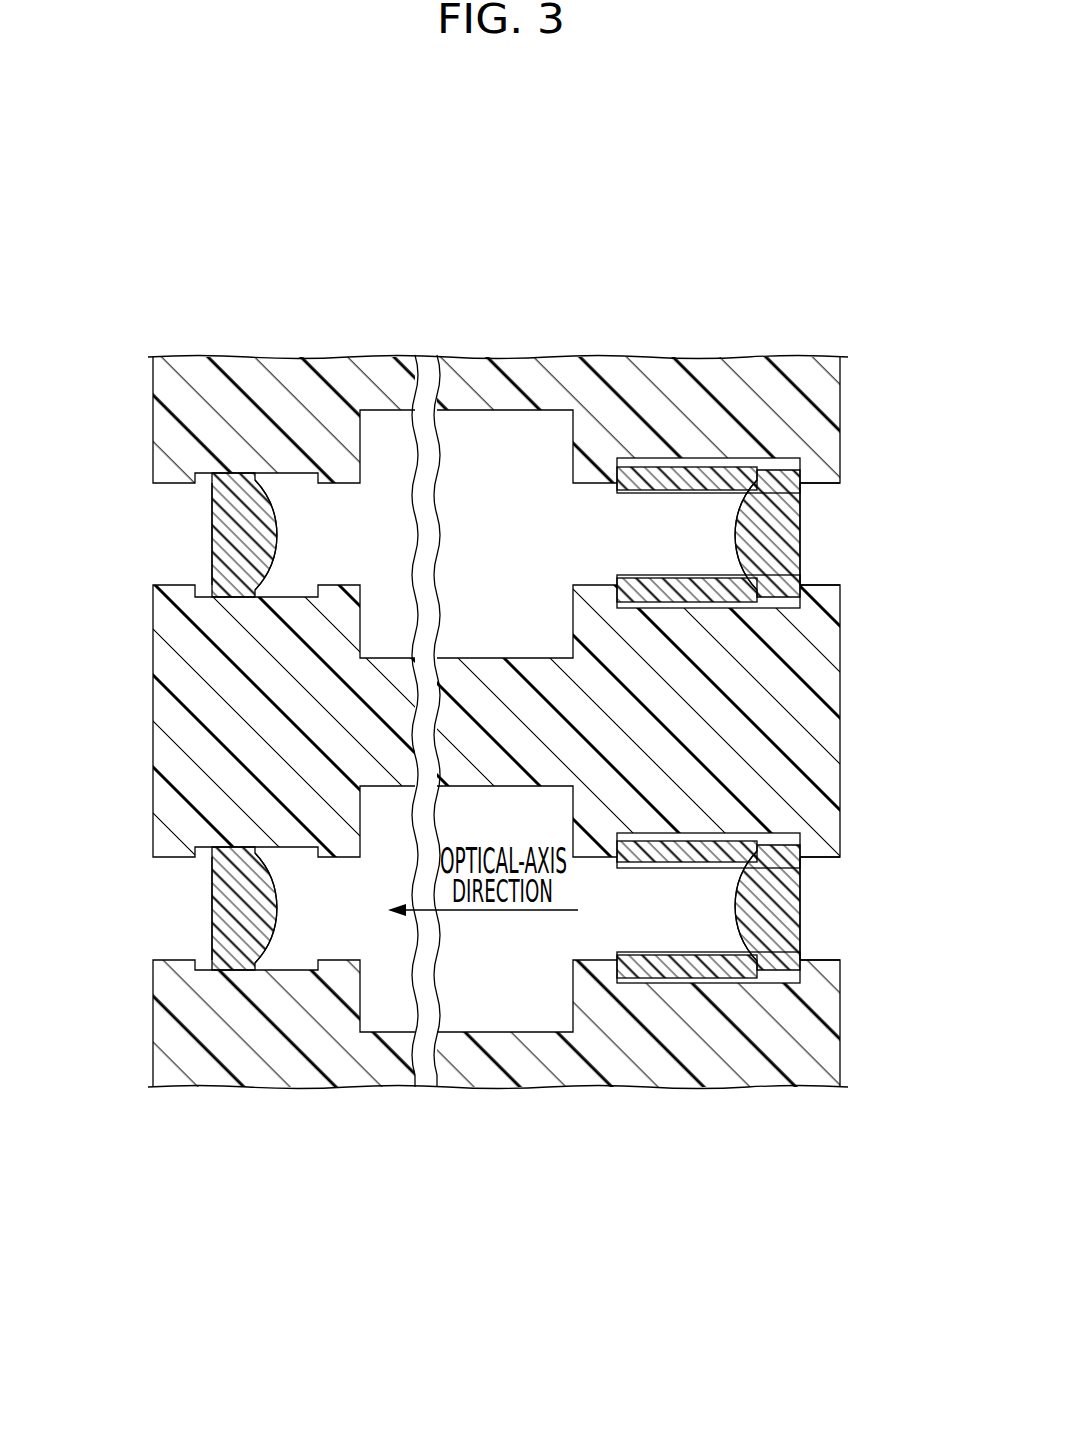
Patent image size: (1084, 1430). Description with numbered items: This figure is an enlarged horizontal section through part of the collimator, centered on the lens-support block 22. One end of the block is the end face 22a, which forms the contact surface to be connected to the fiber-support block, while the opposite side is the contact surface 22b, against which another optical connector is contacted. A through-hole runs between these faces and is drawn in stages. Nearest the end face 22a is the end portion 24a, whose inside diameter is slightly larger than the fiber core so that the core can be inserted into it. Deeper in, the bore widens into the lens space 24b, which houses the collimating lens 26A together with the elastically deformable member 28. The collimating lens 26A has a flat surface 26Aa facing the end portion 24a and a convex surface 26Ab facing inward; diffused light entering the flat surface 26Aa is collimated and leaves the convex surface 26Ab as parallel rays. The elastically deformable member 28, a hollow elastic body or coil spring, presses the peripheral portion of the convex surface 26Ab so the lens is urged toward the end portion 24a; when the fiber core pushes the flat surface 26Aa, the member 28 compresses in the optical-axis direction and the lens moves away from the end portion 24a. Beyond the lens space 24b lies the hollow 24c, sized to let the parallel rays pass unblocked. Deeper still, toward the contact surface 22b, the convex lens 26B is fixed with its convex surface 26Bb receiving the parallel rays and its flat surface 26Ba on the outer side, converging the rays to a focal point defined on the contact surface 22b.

The lens-support block 22 is at (494, 973).
The end face 22a is at (840, 660).
The contact surface 22b is at (153, 660).
The end portion 24a is at (812, 548).
The lens space 24b is at (697, 507).
The hollow 24c is at (496, 298).
The collimating lens 26A is at (817, 728).
The flat surface 26Aa is at (802, 535).
The convex surface 26Ab is at (735, 535).
The convex lens 26B is at (242, 722).
The flat surface 26Ba is at (212, 525).
The convex surface 26Bb is at (278, 535).
The elastically deformable member 28 is at (645, 465).